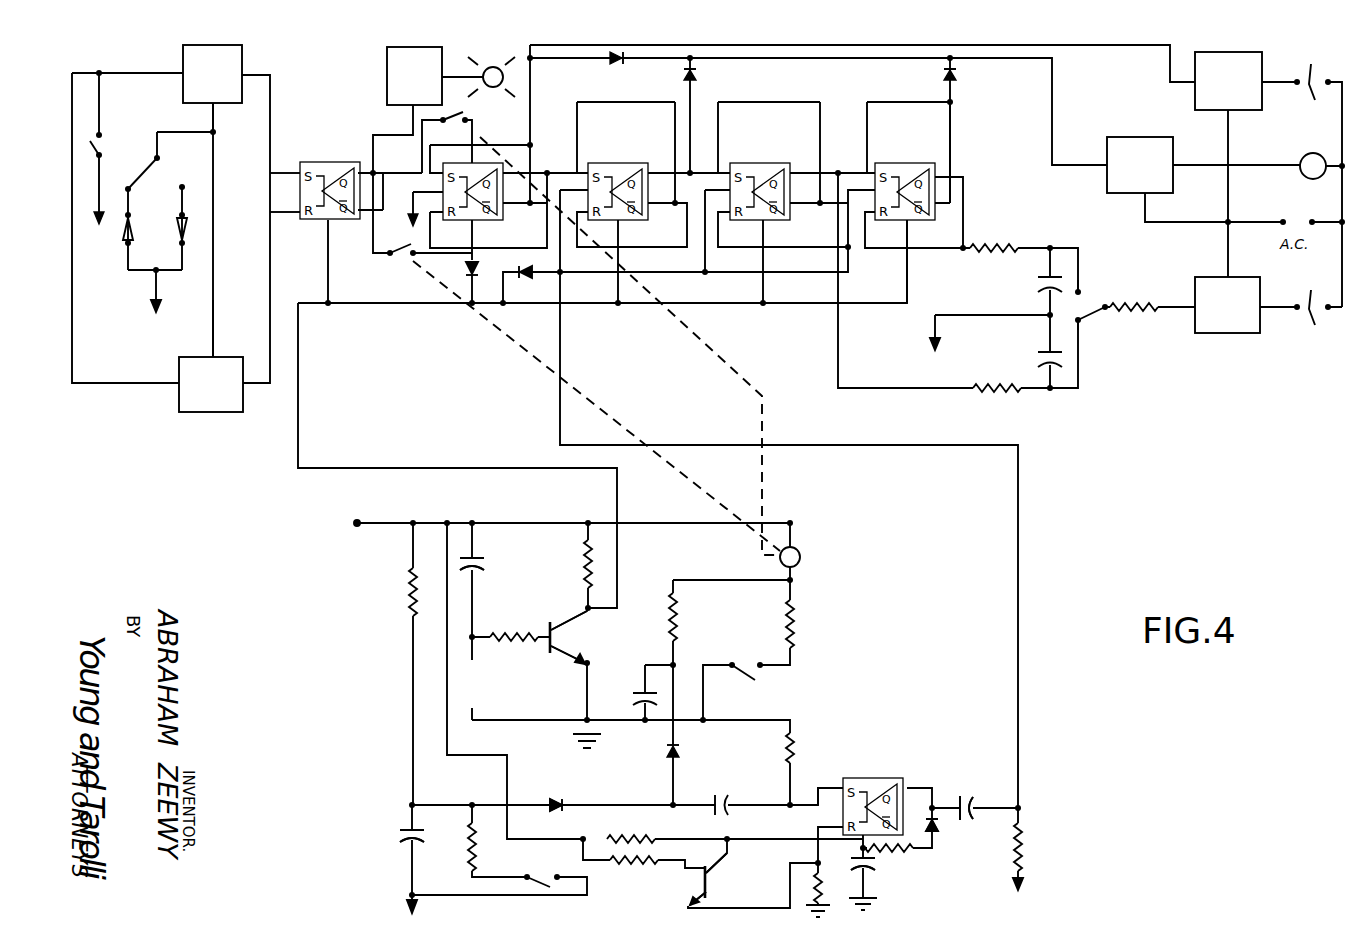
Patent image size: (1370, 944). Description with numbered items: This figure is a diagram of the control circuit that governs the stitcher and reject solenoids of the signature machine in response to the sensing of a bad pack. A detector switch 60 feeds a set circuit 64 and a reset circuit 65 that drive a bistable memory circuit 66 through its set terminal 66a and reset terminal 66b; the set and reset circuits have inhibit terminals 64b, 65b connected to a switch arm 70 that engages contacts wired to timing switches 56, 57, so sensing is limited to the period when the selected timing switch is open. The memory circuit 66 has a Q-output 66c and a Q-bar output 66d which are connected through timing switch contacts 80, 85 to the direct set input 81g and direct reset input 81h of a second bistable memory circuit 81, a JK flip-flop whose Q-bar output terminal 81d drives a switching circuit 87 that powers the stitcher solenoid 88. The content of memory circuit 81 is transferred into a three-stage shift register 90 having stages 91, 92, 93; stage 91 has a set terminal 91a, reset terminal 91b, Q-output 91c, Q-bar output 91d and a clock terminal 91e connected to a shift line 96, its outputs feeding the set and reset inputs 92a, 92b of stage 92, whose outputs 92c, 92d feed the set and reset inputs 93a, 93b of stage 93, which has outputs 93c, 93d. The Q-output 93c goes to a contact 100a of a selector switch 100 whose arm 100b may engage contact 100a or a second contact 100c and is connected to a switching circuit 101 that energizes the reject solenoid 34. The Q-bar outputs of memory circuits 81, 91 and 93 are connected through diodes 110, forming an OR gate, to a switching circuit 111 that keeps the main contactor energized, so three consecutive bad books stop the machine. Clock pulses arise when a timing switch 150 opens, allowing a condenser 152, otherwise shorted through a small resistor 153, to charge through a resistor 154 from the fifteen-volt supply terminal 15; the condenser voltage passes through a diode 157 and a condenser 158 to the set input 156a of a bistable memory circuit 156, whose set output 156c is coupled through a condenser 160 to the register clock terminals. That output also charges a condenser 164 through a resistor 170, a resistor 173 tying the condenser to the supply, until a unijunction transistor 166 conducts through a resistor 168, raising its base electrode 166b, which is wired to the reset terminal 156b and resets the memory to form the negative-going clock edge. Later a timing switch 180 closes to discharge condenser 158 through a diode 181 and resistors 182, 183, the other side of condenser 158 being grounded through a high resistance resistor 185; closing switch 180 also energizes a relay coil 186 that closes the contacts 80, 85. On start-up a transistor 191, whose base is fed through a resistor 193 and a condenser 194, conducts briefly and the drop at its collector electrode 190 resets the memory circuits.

The fifteen-volt power supply terminal 15 is at (357, 514).
The reject solenoid 34 is at (1308, 330).
The timing switch 56 is at (131, 230).
The timing switch 57 is at (180, 242).
The detector switch 60 is at (100, 148).
The set circuit 64 is at (245, 51).
The inhibit terminal of set circuit 64b is at (210, 110).
The reset circuit 65 is at (208, 412).
The inhibit terminal of reset circuit 65b is at (212, 332).
The bistable memory circuit 66 is at (305, 222).
The set terminal 66a is at (272, 176).
The reset terminal 66b is at (272, 212).
The Q-output 66c is at (366, 165).
The Q-bar output 66d is at (366, 225).
The switch arm 70 is at (148, 180).
The timing switch 80 is at (458, 112).
The second bistable memory circuit 81 is at (476, 222).
The Q-bar output terminal 81d is at (505, 210).
The direct set input 81g is at (474, 150).
The direct reset input 81h is at (470, 222).
The timing switch contacts 85 is at (408, 238).
The switching circuit 87 is at (1245, 102).
The stitcher solenoid 88 is at (1318, 72).
The three-stage shift register 90 is at (827, 96).
The memory stage 91 is at (632, 170).
The set terminal 91a is at (580, 165).
The reset terminal 91b is at (584, 222).
The Q-output terminal 91c is at (655, 170).
The Q-bar output terminal 91d is at (662, 208).
The clock terminal 91e is at (572, 185).
The memory stage 92 is at (782, 170).
The set input 92a is at (726, 165).
The reset input 92b is at (726, 222).
The Q-output 92c is at (800, 168).
The Q-bar output 92d is at (804, 210).
The memory stage 93 is at (925, 168).
The set input 93a is at (860, 170).
The reset input 93b is at (872, 222).
The Q-output 93c is at (940, 165).
The Q-bar output 93d is at (934, 212).
The shift line 96 is at (684, 276).
The selector switch 100 is at (1104, 329).
The switch contact 100a is at (1082, 290).
The switch arm 100b is at (1098, 303).
The second switch contact 100c is at (1082, 330).
The switching circuit 101 is at (1213, 333).
The diodes 110 is at (620, 68).
The switching circuit 111 is at (1176, 147).
The timing switch 150 is at (540, 875).
The condenser 152 is at (399, 832).
The resistor 153 is at (470, 850).
The resistor 154 is at (410, 600).
The bistable memory circuit 156 is at (876, 762).
The set input 156a is at (836, 788).
The reset terminal 156b is at (830, 827).
The set output terminal 156c is at (910, 788).
The diode 157 is at (555, 797).
The condenser 158 is at (720, 793).
The condenser 160 is at (976, 808).
The condenser 164 is at (872, 872).
The unijunction transistor 166 is at (719, 891).
The base electrode 166b is at (684, 880).
The resistor 168 is at (835, 888).
The resistor 170 is at (900, 855).
The resistor 173 is at (645, 836).
The timing switch 180 is at (742, 664).
The diode 181 is at (680, 732).
The resistor 182 is at (680, 615).
The resistor 183 is at (800, 617).
The high resistance resistor 185 is at (786, 743).
The relay coil 186 is at (800, 556).
The collector electrode 190 is at (586, 604).
The transistor 191 is at (572, 643).
The resistor 193 is at (524, 630).
The condenser 194 is at (480, 566).